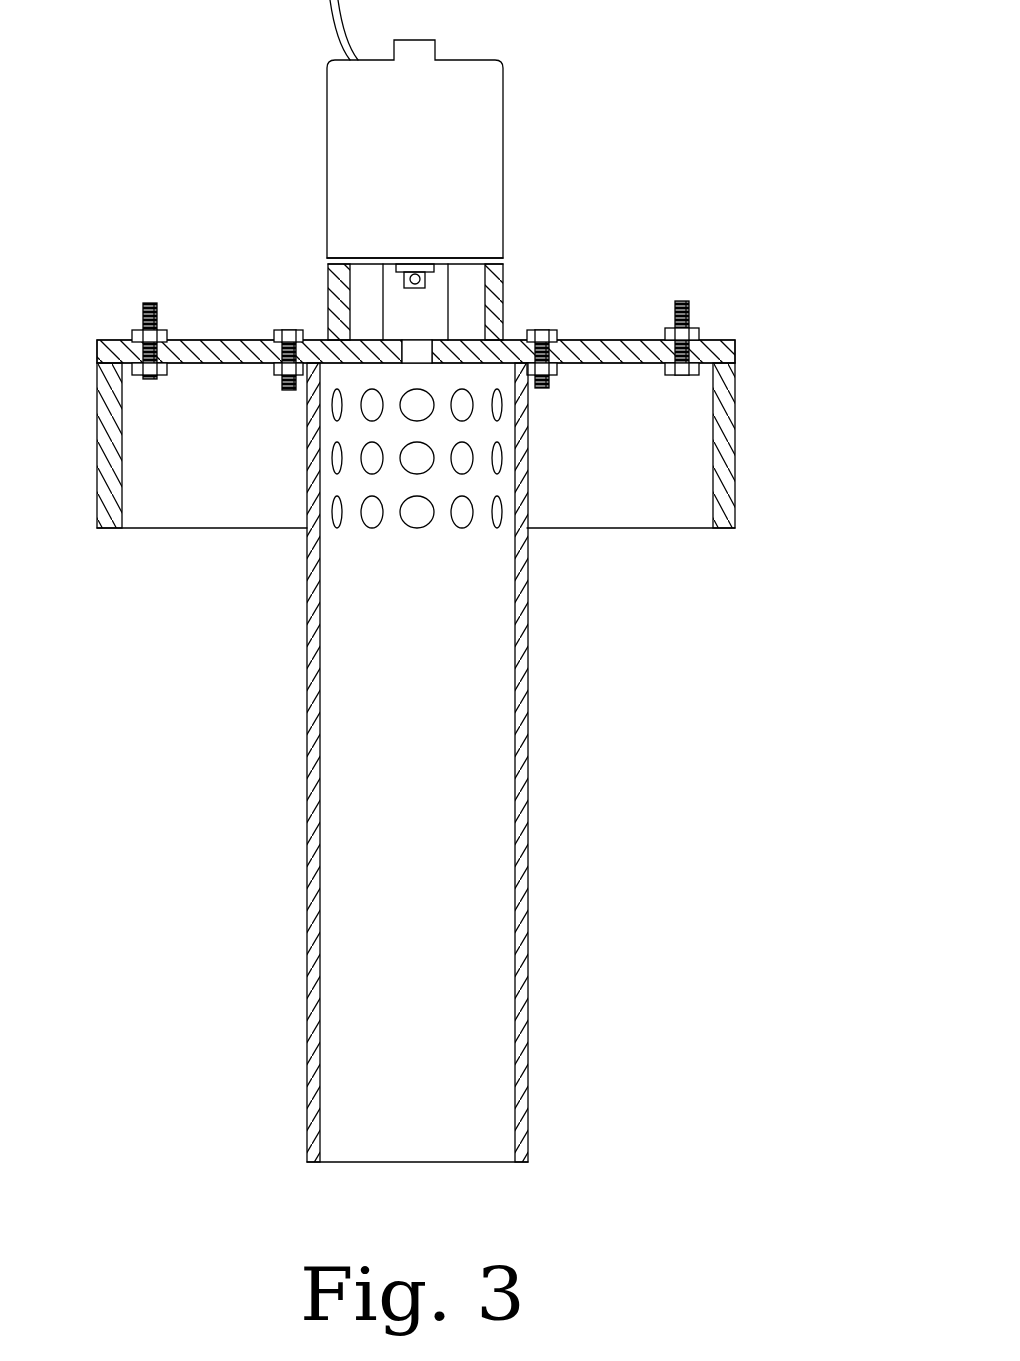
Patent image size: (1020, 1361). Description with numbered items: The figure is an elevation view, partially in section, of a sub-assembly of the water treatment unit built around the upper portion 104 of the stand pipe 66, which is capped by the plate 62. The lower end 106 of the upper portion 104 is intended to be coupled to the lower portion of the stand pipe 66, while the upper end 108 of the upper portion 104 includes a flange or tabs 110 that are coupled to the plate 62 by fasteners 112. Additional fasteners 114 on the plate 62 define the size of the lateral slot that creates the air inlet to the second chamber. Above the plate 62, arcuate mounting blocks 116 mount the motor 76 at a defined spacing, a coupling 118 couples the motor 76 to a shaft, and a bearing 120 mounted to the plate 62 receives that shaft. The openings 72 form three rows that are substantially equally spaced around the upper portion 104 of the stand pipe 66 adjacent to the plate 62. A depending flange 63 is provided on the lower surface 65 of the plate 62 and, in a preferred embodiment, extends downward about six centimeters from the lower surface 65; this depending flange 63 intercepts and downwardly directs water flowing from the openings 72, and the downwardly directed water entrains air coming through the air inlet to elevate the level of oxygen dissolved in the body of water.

The plate 62 is at (618, 340).
The depending flange 63 is at (733, 455).
The lower surface 65 is at (234, 366).
The stand pipe 66 is at (428, 771).
The openings 72 is at (333, 405).
The motor 76 is at (492, 73).
The upper portion 104 is at (528, 690).
The lower end 106 is at (530, 1162).
The upper end 108 is at (522, 410).
The flange or tabs 110 is at (557, 366).
The fasteners 112 is at (289, 330).
The additional fasteners 114 is at (150, 304).
The arcuate mounting blocks 116 is at (503, 270).
The coupling 118 is at (404, 286).
The bearing 120 is at (416, 348).